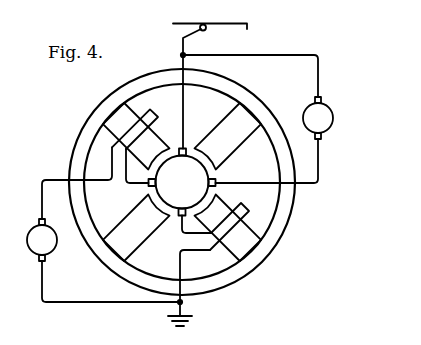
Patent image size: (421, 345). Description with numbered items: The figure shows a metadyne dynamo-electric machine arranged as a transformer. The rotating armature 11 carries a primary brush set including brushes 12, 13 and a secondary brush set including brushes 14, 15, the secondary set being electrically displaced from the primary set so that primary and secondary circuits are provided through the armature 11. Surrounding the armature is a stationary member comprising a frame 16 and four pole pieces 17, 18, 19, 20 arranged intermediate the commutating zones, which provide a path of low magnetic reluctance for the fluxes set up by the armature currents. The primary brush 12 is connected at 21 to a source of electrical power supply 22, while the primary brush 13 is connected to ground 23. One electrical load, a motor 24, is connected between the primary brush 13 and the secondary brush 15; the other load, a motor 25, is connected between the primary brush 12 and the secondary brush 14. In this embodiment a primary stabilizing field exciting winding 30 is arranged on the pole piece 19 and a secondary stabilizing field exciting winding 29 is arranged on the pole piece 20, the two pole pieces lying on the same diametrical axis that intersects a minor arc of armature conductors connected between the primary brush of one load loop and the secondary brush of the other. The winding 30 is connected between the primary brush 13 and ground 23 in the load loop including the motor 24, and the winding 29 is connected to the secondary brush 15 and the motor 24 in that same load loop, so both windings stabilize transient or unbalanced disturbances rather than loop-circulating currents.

The armature 11 is at (156, 190).
The primary brush 12 is at (184, 147).
The primary brush 13 is at (180, 216).
The secondary brush 14 is at (216, 181).
The secondary brush 15 is at (148, 180).
The frame 16 is at (282, 235).
The pole piece 17 is at (240, 142).
The pole piece 18 is at (141, 234).
The pole piece 19 is at (246, 228).
The pole piece 20 is at (157, 134).
The connection 21 is at (197, 33).
The source of electrical power supply 22 is at (238, 26).
The ground 23 is at (184, 302).
The motor 24 is at (30, 247).
The motor 25 is at (332, 112).
The secondary stabilizing field exciting winding 29 is at (143, 122).
The primary stabilizing field exciting winding 30 is at (237, 213).